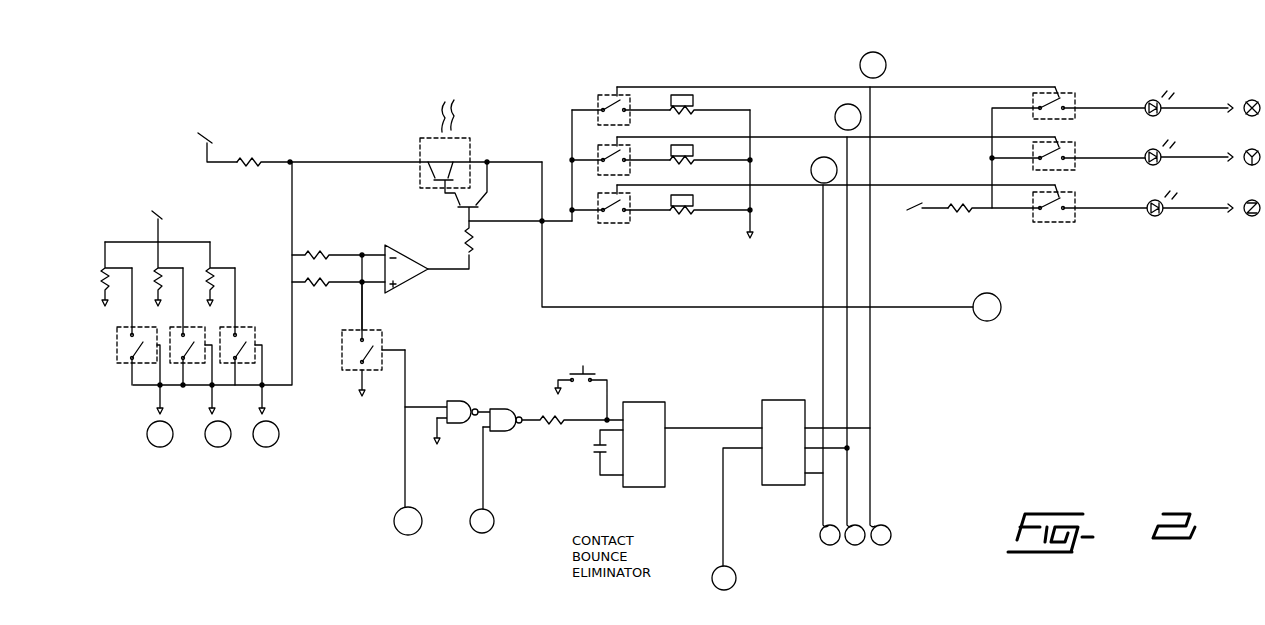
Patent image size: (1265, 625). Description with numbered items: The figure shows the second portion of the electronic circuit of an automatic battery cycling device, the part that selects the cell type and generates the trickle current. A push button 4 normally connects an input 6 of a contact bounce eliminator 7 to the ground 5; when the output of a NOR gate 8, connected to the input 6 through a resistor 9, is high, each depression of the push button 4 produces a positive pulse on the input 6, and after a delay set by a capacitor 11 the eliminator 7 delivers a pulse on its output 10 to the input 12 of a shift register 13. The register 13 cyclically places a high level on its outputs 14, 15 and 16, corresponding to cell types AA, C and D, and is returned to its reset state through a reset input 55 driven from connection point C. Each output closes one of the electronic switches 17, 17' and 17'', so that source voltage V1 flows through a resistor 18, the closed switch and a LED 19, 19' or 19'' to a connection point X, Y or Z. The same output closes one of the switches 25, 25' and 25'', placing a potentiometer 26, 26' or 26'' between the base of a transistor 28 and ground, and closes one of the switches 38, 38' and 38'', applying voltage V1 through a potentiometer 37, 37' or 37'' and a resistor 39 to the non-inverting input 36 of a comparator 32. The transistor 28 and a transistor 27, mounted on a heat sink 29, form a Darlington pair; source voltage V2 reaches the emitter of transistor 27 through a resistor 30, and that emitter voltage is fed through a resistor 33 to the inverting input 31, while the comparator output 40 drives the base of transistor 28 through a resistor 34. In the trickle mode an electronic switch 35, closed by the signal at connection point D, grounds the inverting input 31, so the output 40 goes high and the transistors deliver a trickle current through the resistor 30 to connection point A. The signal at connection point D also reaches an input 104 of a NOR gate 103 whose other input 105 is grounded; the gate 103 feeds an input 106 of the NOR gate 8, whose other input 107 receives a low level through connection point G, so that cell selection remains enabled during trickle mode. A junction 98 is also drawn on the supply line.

The push button 4 is at (590, 370).
The ground 5 is at (556, 382).
The input of contact bounce eliminator 6 is at (609, 408).
The contact bounce eliminator 7 is at (645, 400).
The NOR gate 8 is at (512, 414).
The resistor 9 is at (547, 428).
The output of contact bounce eliminator 10 is at (676, 431).
The capacitor 11 is at (594, 450).
The input of shift register 12 is at (742, 428).
The shift register 13 is at (776, 482).
The output of shift register 14 is at (816, 428).
The output of shift register 15 is at (836, 450).
The output of shift register 16 is at (820, 478).
The electronic switch 17 is at (1089, 83).
The electronic switch 17' is at (1089, 148).
The electronic switch 17'' is at (1090, 195).
The resistor 18 is at (956, 212).
The LED 19 is at (1189, 81).
The LED 19' is at (1186, 140).
The LED 19'' is at (1185, 194).
The electronic switch 25 is at (611, 96).
The electronic switch 25' is at (602, 141).
The electronic switch 25'' is at (620, 219).
The potentiometer 26 is at (710, 102).
The potentiometer 26' is at (710, 164).
The potentiometer 26'' is at (710, 224).
The transistor 27 is at (426, 178).
The transistor 28 is at (482, 203).
The heat sink 29 is at (444, 105).
The resistor 30 is at (258, 150).
The inverting input 31 is at (364, 251).
The comparator 32 is at (427, 276).
The resistor 33 is at (311, 253).
The resistor 34 is at (475, 245).
The electronic switch 35 is at (385, 342).
The non-inverting input 36 is at (371, 286).
The potentiometer 37 is at (119, 274).
The potentiometer 37' is at (173, 274).
The potentiometer 37'' is at (230, 265).
The electronic switch 38 is at (120, 366).
The electronic switch 38' is at (134, 370).
The electronic switch 38'' is at (251, 361).
The resistor 39 is at (320, 286).
The output of comparator 40 is at (444, 262).
The reset input 55 is at (731, 470).
The junction 98 is at (290, 162).
The NOR gate 103 is at (458, 402).
The input of NOR gate 104 is at (414, 400).
The input of NOR gate 105 is at (440, 440).
The input of NOR gate 106 is at (487, 407).
The input of NOR gate 107 is at (486, 480).
The positive direct current source voltage V1 is at (526, 215).
The positive direct current source voltage V2 is at (217, 140).
The connection point A is at (771, 241).
The connection point C is at (724, 578).
The connection point D is at (408, 521).
The connection point G is at (482, 521).
The connection point X is at (1252, 108).
The connection point Y is at (1252, 157).
The connection point Z is at (1252, 208).